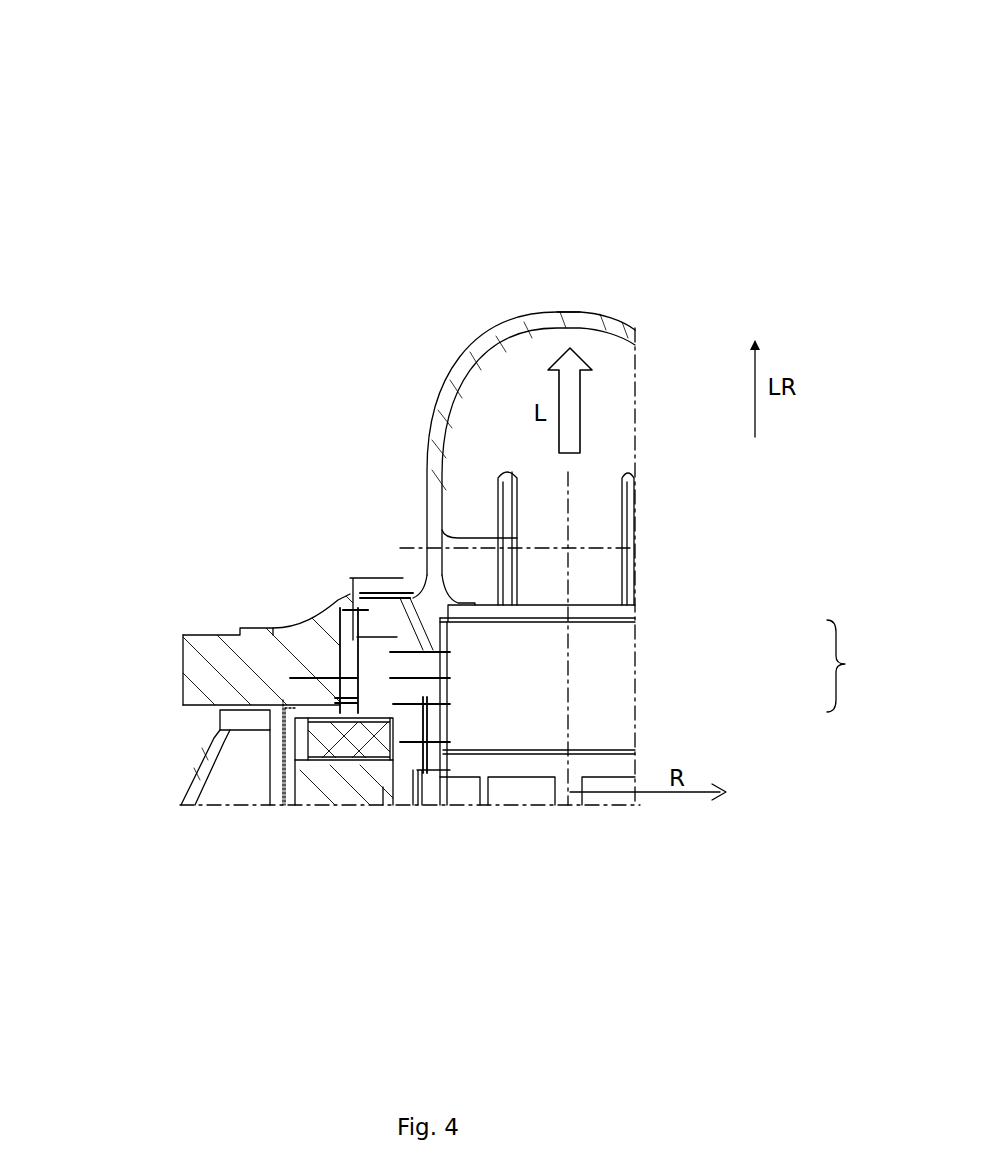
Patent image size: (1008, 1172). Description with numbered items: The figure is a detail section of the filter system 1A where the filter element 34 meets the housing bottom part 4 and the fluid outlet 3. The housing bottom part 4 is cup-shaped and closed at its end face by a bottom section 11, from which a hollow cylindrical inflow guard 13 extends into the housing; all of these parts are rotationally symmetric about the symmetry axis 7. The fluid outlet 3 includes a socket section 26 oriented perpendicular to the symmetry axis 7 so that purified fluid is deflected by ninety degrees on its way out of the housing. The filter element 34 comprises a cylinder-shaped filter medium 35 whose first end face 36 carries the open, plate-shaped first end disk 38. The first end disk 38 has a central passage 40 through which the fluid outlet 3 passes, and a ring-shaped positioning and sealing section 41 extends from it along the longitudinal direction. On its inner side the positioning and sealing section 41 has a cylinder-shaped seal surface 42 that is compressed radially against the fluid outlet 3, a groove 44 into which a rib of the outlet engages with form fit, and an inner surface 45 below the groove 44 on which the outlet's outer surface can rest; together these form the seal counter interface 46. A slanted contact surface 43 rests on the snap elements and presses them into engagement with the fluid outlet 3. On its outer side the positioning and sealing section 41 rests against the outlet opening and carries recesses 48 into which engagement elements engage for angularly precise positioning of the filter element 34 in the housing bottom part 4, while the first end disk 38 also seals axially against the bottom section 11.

The filter system 1A is at (462, 85).
The fluid outlet 3 is at (586, 302).
The socket section 26 is at (476, 352).
The symmetry axis 7 is at (568, 521).
The housing bottom part 4 is at (213, 624).
The bottom section 11 is at (274, 628).
The positioning and sealing section 41 is at (358, 600).
The recesses 48 is at (322, 680).
The first end disk 38 is at (274, 721).
The inflow guard 13 is at (270, 778).
The filter medium 35 is at (383, 790).
The filter element 34 is at (322, 816).
The first end face 36 is at (295, 800).
The passage 40 is at (557, 740).
The contact surface 43 is at (443, 652).
The seal surface 42 is at (443, 678).
The groove 44 is at (443, 704).
The inner surface 45 is at (443, 742).
The seal counter interface 46 is at (856, 666).